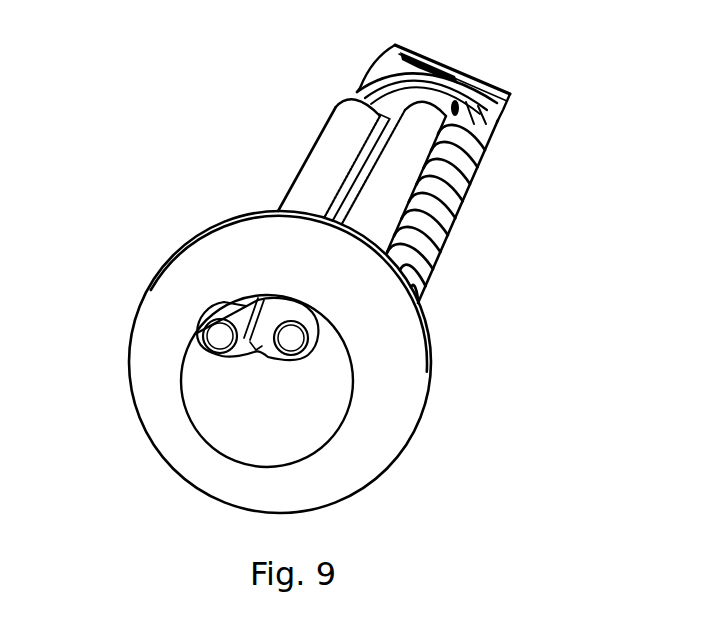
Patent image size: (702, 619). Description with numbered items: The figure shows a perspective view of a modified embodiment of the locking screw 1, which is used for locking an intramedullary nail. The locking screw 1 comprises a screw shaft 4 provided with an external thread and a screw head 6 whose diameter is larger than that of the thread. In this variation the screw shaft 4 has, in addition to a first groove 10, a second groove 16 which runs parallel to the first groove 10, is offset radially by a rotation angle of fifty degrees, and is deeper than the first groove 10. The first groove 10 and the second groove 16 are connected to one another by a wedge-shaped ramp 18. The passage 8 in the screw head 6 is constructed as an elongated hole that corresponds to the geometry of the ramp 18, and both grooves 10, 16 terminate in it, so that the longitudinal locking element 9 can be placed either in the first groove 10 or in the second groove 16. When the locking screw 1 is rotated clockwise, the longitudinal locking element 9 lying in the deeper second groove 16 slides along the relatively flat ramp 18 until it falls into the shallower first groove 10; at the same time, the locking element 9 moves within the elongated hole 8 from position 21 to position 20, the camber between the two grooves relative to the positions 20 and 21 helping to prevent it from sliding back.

The locking screw 1 is at (160, 465).
The screw shaft 4 is at (455, 198).
The screw head 6 is at (168, 320).
The passage 8 is at (247, 318).
The longitudinal wedging element 9 is at (428, 127).
The first groove 10 is at (203, 353).
The second groove 16 is at (297, 357).
The wedge-shaped ramp 18 is at (262, 348).
The position 20 is at (219, 335).
The position 21 is at (295, 335).